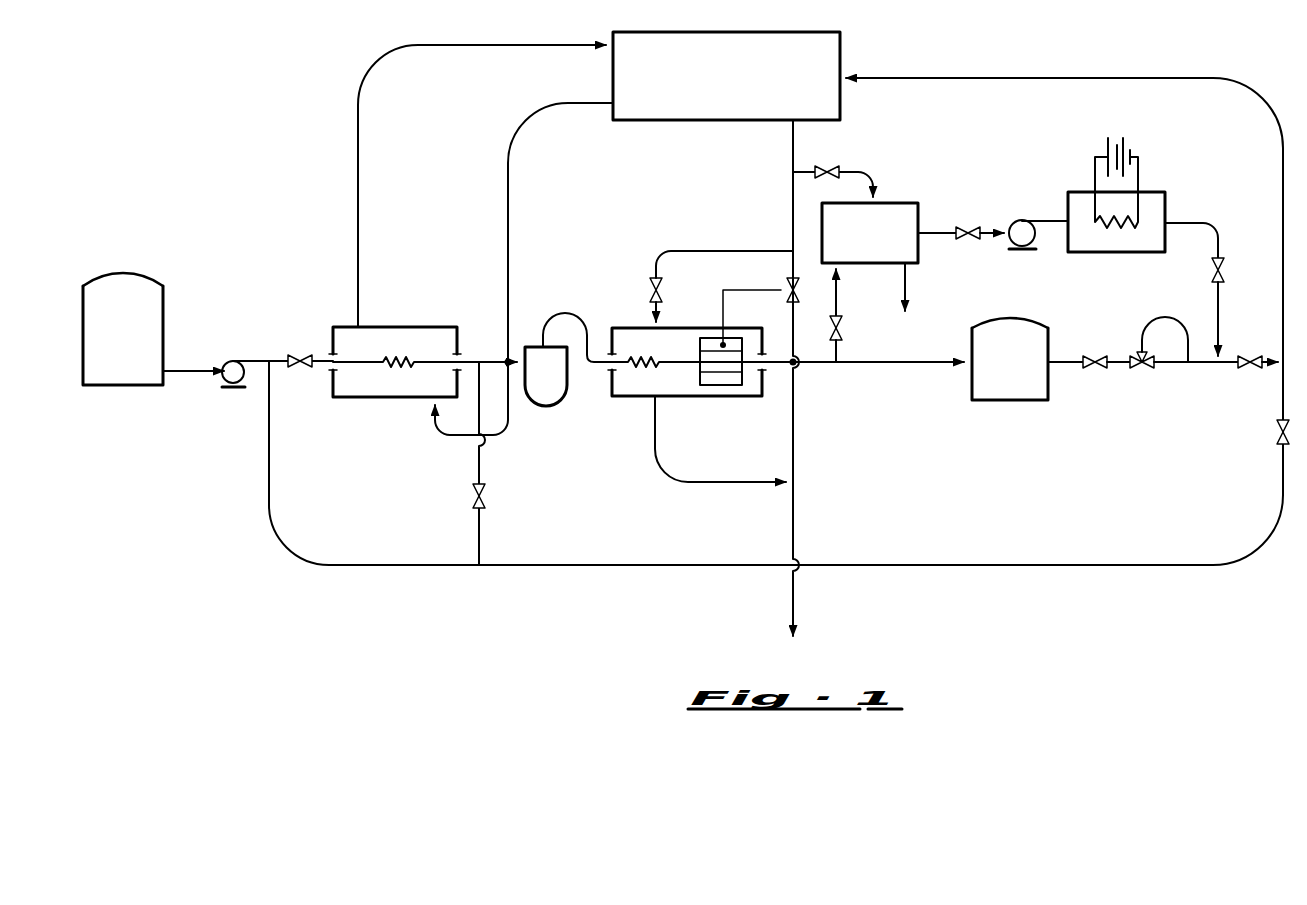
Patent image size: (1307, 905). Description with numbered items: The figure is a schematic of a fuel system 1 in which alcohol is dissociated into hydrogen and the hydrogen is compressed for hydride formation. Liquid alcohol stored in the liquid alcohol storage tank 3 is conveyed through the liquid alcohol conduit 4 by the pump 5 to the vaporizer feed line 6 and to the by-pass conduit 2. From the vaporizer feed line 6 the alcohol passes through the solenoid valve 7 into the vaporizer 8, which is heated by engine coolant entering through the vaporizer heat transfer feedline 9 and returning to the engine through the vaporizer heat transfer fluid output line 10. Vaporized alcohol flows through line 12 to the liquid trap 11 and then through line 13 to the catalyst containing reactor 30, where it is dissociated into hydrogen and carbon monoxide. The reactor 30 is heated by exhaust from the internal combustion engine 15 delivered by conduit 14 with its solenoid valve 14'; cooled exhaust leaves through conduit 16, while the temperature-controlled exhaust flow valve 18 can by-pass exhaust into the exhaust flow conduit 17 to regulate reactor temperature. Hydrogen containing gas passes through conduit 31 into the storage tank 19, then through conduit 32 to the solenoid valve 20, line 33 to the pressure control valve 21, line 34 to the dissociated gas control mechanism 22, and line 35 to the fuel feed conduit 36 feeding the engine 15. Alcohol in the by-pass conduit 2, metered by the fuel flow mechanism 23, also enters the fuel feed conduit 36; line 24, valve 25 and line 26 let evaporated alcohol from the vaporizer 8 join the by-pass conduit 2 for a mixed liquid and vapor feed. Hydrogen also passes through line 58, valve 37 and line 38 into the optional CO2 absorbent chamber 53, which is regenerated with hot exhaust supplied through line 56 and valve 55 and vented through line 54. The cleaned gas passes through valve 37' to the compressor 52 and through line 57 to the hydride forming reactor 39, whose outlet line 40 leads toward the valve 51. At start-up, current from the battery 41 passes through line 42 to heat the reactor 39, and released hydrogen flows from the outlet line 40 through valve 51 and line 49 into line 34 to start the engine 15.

The fuel system 1 is at (330, 60).
The by-pass conduit 2 is at (328, 565).
The liquid alcohol storage tank 3 is at (135, 334).
The liquid alcohol conduit 4 is at (183, 371).
The pump 5 is at (228, 380).
The vaporizer feed line 6 is at (263, 361).
The solenoid valve 7 is at (300, 355).
The vaporizer 8 is at (409, 392).
The vaporizer heat transfer feedline 9 is at (509, 175).
The vaporizer heat transfer fluid output line 10 is at (358, 135).
The liquid trap 11 is at (557, 379).
The line 12 is at (510, 358).
The line 13 is at (566, 314).
The conduit 14 is at (724, 243).
The solenoid valve 14' is at (626, 288).
The internal combustion engine 15 is at (741, 81).
The conduit 16 is at (657, 466).
The exhaust flow conduit 17 is at (795, 428).
The exhaust flow valve 18 is at (790, 288).
The storage tank 19 is at (1021, 369).
The solenoid valve 20 is at (1093, 356).
The pressure control valve 21 is at (1140, 354).
The dissociated gas control mechanism 22 is at (1252, 356).
The fuel flow mechanism 23 is at (1278, 432).
The line 24 is at (479, 471).
The valve 25 is at (486, 496).
The line 26 is at (479, 537).
The catalyst containing reactor 30 is at (718, 338).
The conduit 31 is at (815, 364).
The conduit 32 is at (1064, 365).
The line 33 is at (1120, 365).
The line 34 is at (1225, 365).
The line 35 is at (1276, 365).
The fuel feed conduit 36 is at (1032, 78).
The valve 37 is at (861, 328).
The valve 37' is at (980, 208).
The line 38 is at (838, 296).
The hydride forming reactor 39 is at (1128, 253).
The line 40 is at (1140, 226).
The battery 41 is at (1128, 144).
The line 42 is at (1094, 172).
The line 49 is at (1220, 312).
The valve 51 is at (1224, 270).
The compressor 52 is at (1020, 221).
The CO2 absorbent chamber 53 is at (879, 243).
The line 54 is at (908, 292).
The valve 55 is at (827, 166).
The line 56 is at (866, 176).
The line 57 is at (935, 233).
The line 58 is at (838, 356).